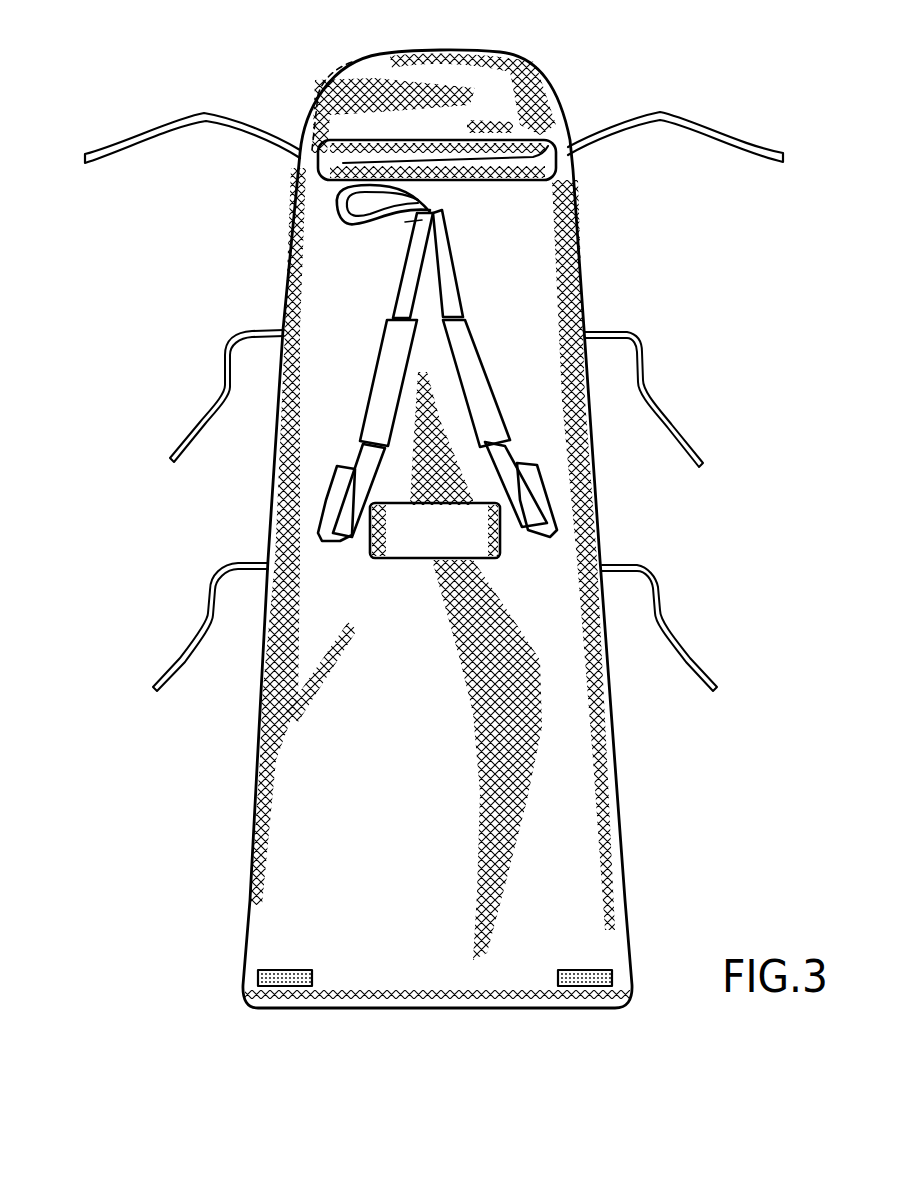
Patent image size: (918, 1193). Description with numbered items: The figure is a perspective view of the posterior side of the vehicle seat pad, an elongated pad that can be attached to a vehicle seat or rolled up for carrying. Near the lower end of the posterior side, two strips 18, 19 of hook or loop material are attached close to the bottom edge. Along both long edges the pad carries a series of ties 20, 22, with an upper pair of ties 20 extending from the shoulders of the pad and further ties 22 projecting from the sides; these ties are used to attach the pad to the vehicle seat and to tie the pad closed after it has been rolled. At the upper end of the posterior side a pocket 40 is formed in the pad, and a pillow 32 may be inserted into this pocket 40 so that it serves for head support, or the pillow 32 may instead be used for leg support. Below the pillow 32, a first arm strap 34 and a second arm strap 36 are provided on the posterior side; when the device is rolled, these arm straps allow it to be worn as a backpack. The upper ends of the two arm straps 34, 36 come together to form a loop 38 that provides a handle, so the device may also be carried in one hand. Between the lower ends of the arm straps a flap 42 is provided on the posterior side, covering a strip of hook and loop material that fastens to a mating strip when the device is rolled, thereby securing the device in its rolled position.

The strip of hook or loop material 18 is at (275, 975).
The strip of hook or loop material 19 is at (558, 978).
The ties 20 is at (204, 111).
The ties 22 is at (683, 432).
The pillow 32 is at (496, 177).
The first arm strap 34 is at (403, 287).
The second arm strap 36 is at (453, 293).
The loop 38 is at (348, 220).
The pocket 40 is at (493, 82).
The flap 42 is at (404, 538).